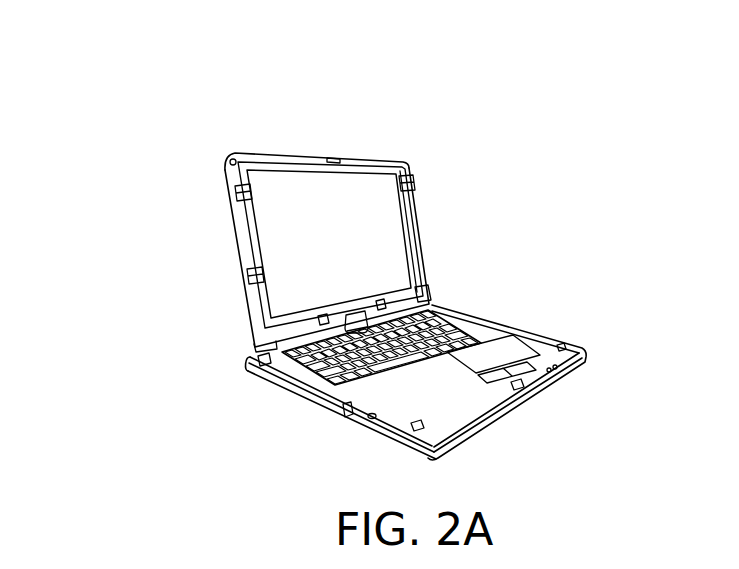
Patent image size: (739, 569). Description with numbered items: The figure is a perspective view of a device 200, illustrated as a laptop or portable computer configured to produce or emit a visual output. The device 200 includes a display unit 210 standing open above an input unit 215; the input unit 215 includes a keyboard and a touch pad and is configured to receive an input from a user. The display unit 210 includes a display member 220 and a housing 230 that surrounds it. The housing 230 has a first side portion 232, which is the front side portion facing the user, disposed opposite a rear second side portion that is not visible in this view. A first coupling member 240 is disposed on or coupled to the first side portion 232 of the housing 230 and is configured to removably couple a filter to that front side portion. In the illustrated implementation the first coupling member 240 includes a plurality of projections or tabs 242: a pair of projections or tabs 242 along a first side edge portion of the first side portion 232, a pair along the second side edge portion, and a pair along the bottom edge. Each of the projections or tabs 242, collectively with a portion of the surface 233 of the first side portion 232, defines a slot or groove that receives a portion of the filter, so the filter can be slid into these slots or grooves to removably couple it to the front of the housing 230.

The device 200 is at (196, 64).
The display unit 210 is at (404, 162).
The input unit 215 is at (525, 347).
The display member 220 is at (380, 207).
The housing 230 is at (221, 155).
The first side portion 232 is at (357, 160).
The surface 233 is at (279, 156).
The first coupling member 240 is at (194, 251).
The projections or tabs 242 is at (235, 194).